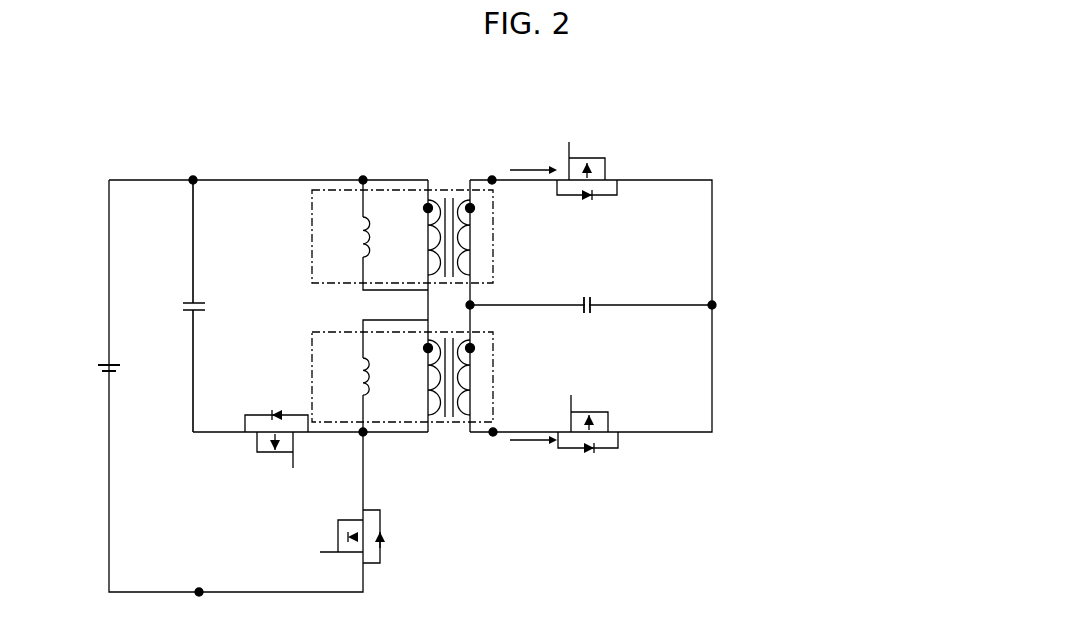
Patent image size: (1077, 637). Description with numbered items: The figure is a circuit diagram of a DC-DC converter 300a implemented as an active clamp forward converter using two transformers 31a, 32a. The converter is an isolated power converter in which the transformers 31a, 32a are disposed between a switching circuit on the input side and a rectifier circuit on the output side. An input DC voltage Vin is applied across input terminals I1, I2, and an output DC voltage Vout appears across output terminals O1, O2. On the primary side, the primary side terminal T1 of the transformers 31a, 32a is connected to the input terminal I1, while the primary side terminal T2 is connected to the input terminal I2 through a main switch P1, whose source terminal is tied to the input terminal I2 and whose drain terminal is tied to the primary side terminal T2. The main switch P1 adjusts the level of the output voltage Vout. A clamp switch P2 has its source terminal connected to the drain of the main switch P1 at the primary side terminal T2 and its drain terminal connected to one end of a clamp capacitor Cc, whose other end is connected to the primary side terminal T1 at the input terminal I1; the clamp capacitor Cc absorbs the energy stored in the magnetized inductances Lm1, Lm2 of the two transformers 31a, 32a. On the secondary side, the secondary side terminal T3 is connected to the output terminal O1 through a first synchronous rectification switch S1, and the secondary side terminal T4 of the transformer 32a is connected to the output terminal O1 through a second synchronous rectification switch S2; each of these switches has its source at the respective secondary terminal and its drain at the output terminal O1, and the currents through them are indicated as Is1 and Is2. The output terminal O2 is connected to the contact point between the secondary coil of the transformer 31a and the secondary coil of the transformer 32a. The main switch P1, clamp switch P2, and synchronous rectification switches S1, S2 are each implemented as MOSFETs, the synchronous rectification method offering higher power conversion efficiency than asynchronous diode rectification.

The DC-DC converter 300a is at (1052, 94).
The input DC voltage Vin is at (82, 370).
The input terminal I1 is at (193, 166).
The input terminal I2 is at (198, 606).
The primary side terminal T1 is at (360, 166).
The primary side terminal T2 is at (380, 445).
The secondary side terminal T3 is at (490, 166).
The secondary side terminal T4 is at (493, 445).
The output terminal O1 is at (727, 293).
The output terminal O2 is at (473, 309).
The clamp capacitor Cc is at (211, 306).
The magnetized inductance Lm1 is at (345, 237).
The magnetized inductance Lm2 is at (344, 376).
The transformer 31a is at (432, 192).
The transformer 32a is at (437, 425).
The output DC voltage Vout is at (584, 290).
The first synchronous rectification switch S1 is at (587, 156).
The second synchronous rectification switch S2 is at (588, 411).
The first secondary current Is1 is at (533, 160).
The second secondary current Is2 is at (533, 455).
The main switch P1 is at (334, 536).
The clamp switch P2 is at (276, 452).